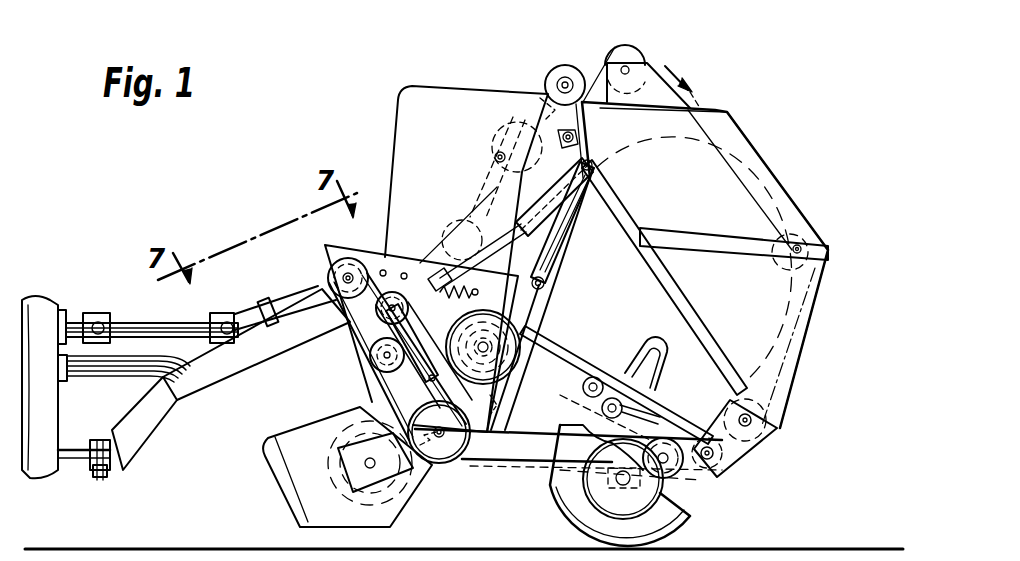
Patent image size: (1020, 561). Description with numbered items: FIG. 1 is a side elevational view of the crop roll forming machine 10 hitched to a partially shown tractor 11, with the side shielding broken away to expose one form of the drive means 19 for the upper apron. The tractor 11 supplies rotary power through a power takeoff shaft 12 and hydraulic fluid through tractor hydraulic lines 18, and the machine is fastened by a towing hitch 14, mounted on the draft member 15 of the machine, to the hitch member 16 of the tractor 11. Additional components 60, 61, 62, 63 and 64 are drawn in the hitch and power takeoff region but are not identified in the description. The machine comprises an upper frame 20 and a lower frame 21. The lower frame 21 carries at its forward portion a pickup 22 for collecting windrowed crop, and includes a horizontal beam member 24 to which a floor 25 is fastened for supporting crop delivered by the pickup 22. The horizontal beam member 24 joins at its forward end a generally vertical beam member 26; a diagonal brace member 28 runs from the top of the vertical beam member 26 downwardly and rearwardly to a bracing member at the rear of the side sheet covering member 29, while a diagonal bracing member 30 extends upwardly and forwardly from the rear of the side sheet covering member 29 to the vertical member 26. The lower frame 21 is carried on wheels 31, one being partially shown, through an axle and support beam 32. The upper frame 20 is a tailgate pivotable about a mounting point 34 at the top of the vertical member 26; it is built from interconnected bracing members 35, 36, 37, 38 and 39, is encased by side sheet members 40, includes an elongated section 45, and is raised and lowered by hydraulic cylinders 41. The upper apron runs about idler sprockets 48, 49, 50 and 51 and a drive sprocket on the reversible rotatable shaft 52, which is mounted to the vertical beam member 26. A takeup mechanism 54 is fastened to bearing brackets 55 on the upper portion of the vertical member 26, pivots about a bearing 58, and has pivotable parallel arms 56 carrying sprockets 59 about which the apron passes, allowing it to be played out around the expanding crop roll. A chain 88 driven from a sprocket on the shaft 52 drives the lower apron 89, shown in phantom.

The crop roll forming machine 10 is at (451, 46).
The tractor 11 is at (43, 272).
The power takeoff shaft 12 is at (70, 312).
The towing hitch 14 is at (106, 472).
The draft member 15 is at (226, 388).
The hitch member 16 is at (70, 445).
The tractor hydraulic lines 18 is at (123, 370).
The drive means 19 is at (338, 377).
The upper frame 20 is at (768, 148).
The lower frame 21 is at (512, 466).
The pickup 22 is at (392, 520).
The horizontal beam member 24 is at (478, 462).
The floor 25 is at (603, 406).
The vertical beam member 26 is at (550, 305).
The diagonal brace member 28 is at (616, 233).
The side sheet covering member 29 is at (679, 364).
The diagonal bracing member 30 is at (576, 350).
The wheels 31 is at (680, 520).
The axle and support beam 32 is at (660, 485).
The mounting point 34 is at (575, 137).
The bracing member 35 is at (636, 230).
The bracing member 36 is at (720, 107).
The bracing member 37 is at (797, 196).
The bracing member 38 is at (698, 234).
The bracing member 39 is at (810, 333).
The side sheet members 40 is at (694, 257).
The hydraulic cylinders 41 is at (568, 243).
The elongated section 45 is at (780, 440).
The idler sprocket 48 is at (745, 462).
The idler sprocket 49 is at (765, 410).
The idler sprocket 50 is at (818, 270).
The idler sprocket 51 is at (628, 52).
The reversible rotatable shaft 52 is at (488, 344).
The takeup mechanism 54 is at (488, 146).
The bearing brackets 55 is at (510, 125).
The pivotable parallel arms 56 is at (545, 95).
The bearing 58 is at (494, 157).
The sprockets 59 is at (560, 66).
The drawbar 60 is at (148, 322).
The extension bar 61 is at (256, 305).
The front clevis 62 is at (104, 312).
The rear clevis 63 is at (228, 313).
The collar 64 is at (262, 298).
The chain 88 is at (506, 411).
The lower apron 89 is at (551, 487).